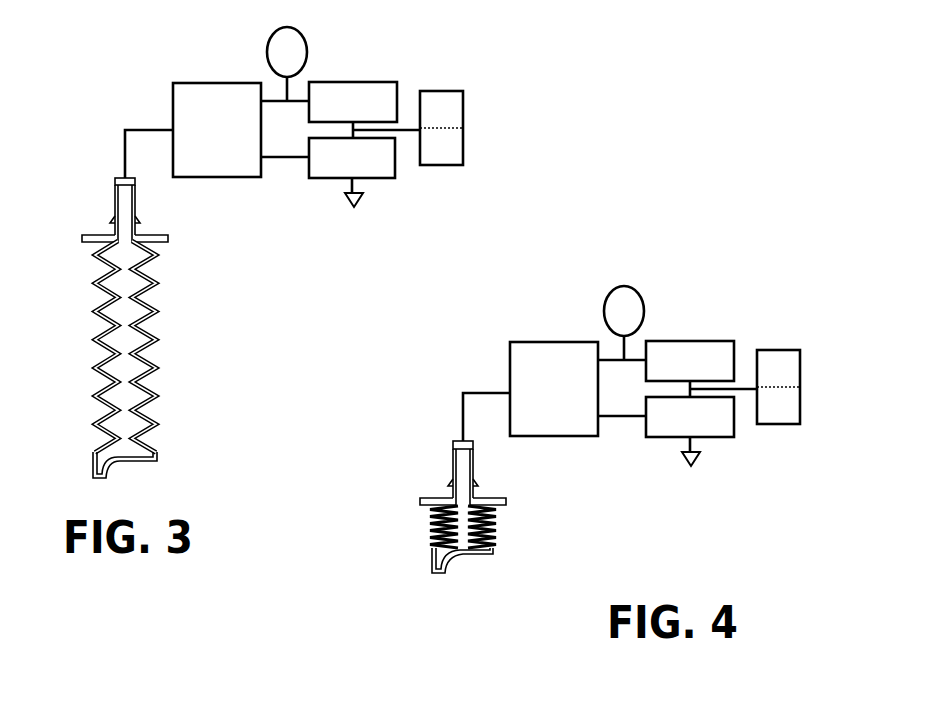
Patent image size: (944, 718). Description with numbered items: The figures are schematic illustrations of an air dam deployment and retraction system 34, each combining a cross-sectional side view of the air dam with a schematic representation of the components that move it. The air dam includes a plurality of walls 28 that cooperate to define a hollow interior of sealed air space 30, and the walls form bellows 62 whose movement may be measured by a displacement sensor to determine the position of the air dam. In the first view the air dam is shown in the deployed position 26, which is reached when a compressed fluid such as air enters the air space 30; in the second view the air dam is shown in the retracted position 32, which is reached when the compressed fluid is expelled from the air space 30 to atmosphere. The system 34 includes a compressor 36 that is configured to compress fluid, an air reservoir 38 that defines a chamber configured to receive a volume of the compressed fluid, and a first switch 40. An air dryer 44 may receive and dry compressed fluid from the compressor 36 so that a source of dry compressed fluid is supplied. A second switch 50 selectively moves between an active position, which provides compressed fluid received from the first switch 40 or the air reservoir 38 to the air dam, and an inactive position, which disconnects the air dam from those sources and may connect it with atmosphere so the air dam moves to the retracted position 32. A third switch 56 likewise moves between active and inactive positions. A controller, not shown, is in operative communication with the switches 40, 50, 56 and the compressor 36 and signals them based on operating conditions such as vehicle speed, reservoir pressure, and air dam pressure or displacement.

In FIG. 3, the deployed position 26 is at (82, 415).
In FIG. 3, the walls 28 is at (157, 378).
In FIG. 4, the walls 28 is at (497, 520).
In FIG. 3, the sealed air space 30 is at (122, 323).
In FIG. 4, the sealed air space 30 is at (463, 530).
In FIG. 4, the retracted position 32 is at (417, 542).
In FIG. 3, the air dam deployment and retraction system 34 is at (86, 124).
In FIG. 3, the compressor 36 is at (441, 128).
In FIG. 4, the compressor 36 is at (778, 387).
In FIG. 3, the air reservoir 38 is at (287, 64).
In FIG. 4, the air reservoir 38 is at (624, 323).
In FIG. 3, the first switch 40 is at (329, 102).
In FIG. 4, the first switch 40 is at (666, 361).
In FIG. 3, the air dryer 44 is at (441, 143).
In FIG. 4, the air dryer 44 is at (778, 402).
In FIG. 3, the second switch 50 is at (217, 130).
In FIG. 4, the second switch 50 is at (554, 389).
In FIG. 3, the third switch 56 is at (340, 164).
In FIG. 4, the third switch 56 is at (677, 423).
In FIG. 3, the bellows 62 is at (157, 433).
In FIG. 4, the bellows 62 is at (493, 547).